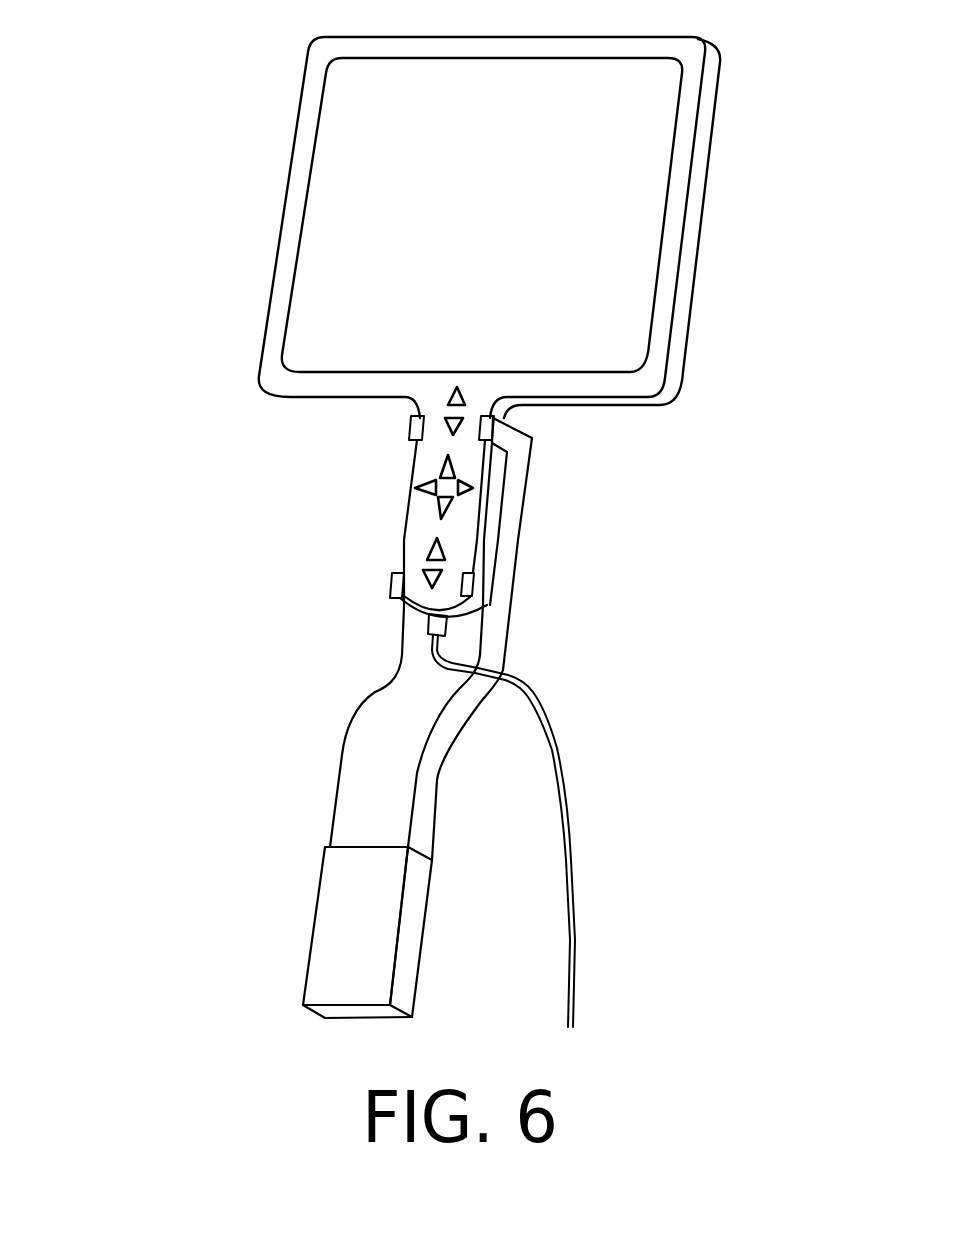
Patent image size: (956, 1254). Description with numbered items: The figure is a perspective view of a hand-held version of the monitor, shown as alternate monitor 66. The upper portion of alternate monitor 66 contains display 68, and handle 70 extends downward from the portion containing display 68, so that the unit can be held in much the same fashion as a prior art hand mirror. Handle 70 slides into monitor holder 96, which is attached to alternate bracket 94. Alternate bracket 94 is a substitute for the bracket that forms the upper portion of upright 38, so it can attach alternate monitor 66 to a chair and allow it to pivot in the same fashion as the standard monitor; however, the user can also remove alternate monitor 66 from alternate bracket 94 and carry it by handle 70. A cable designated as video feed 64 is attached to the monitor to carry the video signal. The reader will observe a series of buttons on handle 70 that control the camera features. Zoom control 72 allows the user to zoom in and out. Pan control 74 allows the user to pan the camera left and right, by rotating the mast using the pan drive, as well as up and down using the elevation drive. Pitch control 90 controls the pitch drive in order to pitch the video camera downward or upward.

The upright 38 is at (353, 937).
The video feed 64 is at (567, 873).
The alternate monitor 66 is at (708, 441).
The display 68 is at (520, 167).
The handle 70 is at (422, 528).
The zoom control 72 is at (447, 400).
The pan control 74 is at (423, 485).
The pitch control 90 is at (445, 557).
The alternate bracket 94 is at (370, 812).
The monitor holder 96 is at (518, 462).